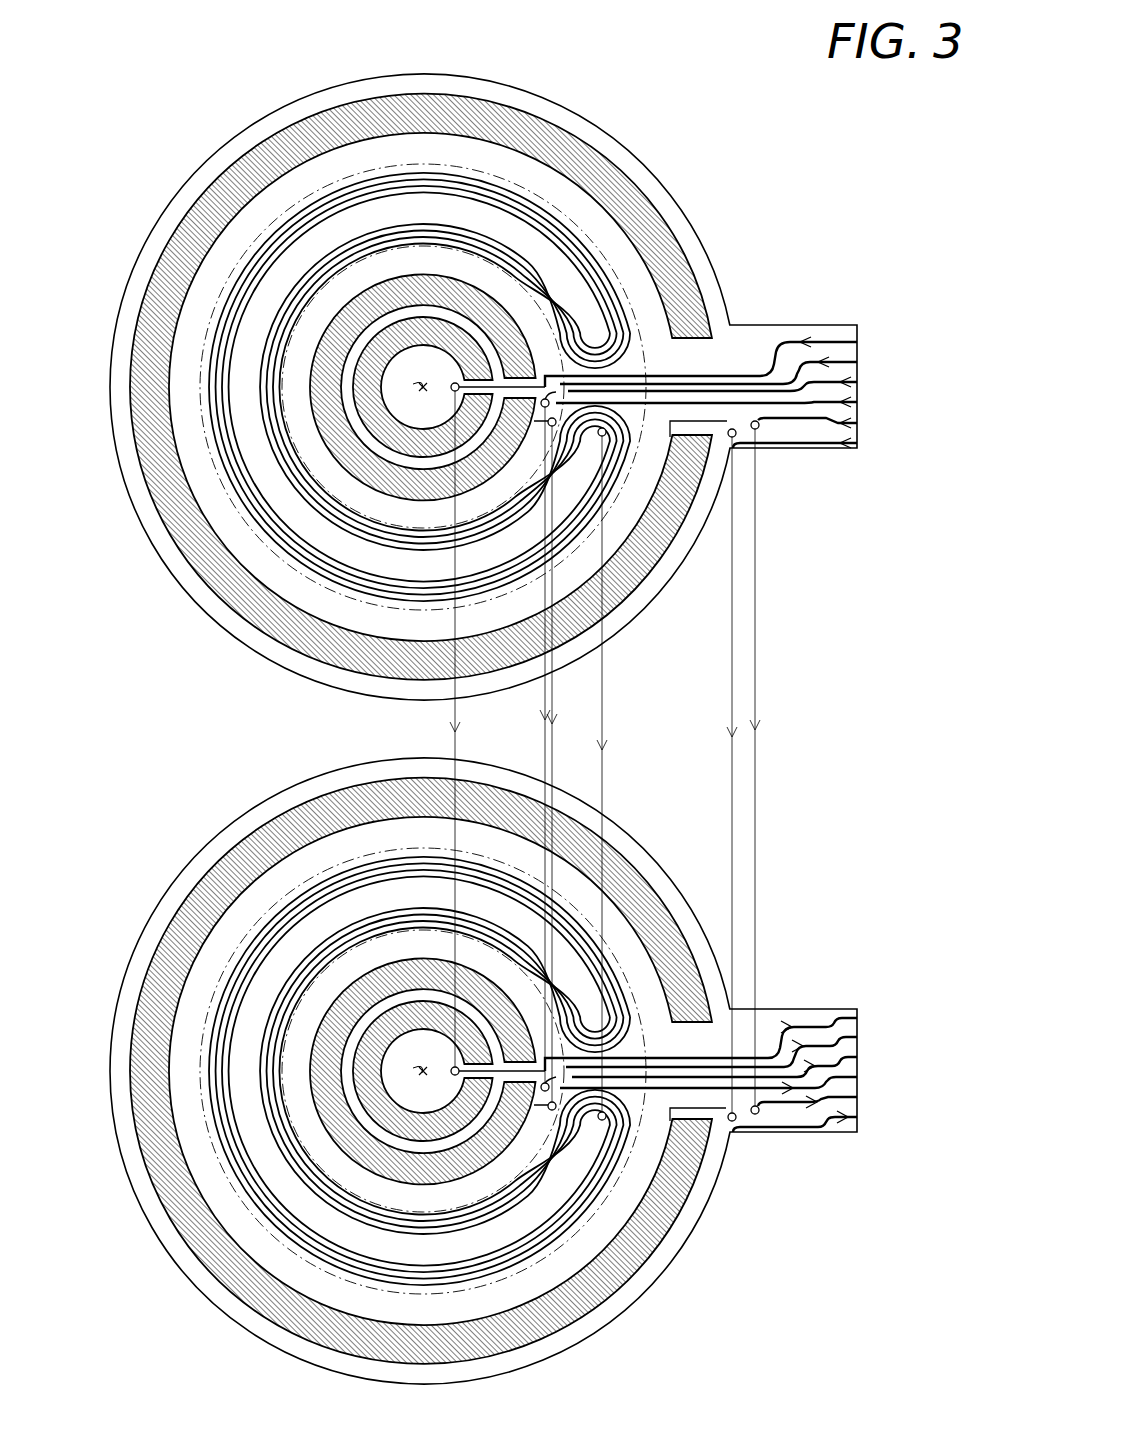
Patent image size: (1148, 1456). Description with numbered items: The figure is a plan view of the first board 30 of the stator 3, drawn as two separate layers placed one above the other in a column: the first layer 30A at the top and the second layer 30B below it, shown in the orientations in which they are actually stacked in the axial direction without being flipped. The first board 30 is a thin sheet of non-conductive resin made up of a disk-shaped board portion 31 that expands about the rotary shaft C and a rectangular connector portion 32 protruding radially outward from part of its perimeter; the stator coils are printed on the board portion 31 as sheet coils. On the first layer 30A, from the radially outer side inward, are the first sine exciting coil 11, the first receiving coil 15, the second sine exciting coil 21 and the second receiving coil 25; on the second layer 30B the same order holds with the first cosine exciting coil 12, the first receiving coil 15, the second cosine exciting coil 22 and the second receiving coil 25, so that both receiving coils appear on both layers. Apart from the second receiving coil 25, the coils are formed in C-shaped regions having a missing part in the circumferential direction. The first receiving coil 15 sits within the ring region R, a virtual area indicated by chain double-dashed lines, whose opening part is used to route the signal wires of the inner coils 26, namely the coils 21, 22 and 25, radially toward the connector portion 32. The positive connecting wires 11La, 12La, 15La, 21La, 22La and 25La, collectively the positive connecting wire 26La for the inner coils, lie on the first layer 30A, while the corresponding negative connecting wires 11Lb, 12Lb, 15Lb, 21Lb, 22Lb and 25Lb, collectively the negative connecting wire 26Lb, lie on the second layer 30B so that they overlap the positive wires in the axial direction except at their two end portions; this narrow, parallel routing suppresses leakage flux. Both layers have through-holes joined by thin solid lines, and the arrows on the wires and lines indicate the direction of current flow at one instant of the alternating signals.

The stator 3 is at (501, 706).
The first board 30 is at (102, 108).
The first layer 30A is at (150, 217).
The second layer 30B is at (150, 922).
The board portion 31 is at (690, 209).
The connector portion 32 is at (866, 383).
The first sine exciting coil 11 is at (156, 532).
The first cosine exciting coil 12 is at (156, 1217).
The first receiving coil 15 is at (212, 455).
The second sine exciting coil 21 is at (306, 394).
The second cosine exciting coil 22 is at (306, 1078).
The second receiving coil 25 is at (343, 382).
The inner coils 26 is at (43, 297).
The ring region R is at (598, 213).
The rotary shaft C is at (411, 721).
The positive connecting wire of signal wire 26L 26La is at (940, 334).
The positive connecting wire of signal wire 25L 25La is at (740, 376).
The positive connecting wire of signal wire 22L 22La is at (757, 384).
The positive connecting wire of signal wire 21L 21La is at (768, 391).
The positive connecting wire of signal wire 11L 11La is at (790, 426).
The positive connecting wire of signal wire 12L 12La is at (765, 408).
The positive connecting wire of signal wire 15L 15La is at (748, 452).
The negative connecting wire of signal wire 26L 26Lb is at (940, 994).
The negative connecting wire of signal wire 25L 25Lb is at (796, 1027).
The negative connecting wire of signal wire 22L 22Lb is at (808, 1046).
The negative connecting wire of signal wire 21L 21Lb is at (836, 1066).
The negative connecting wire of signal wire 11L 11Lb is at (807, 1105).
The negative connecting wire of signal wire 12L 12Lb is at (770, 1095).
The negative connecting wire of signal wire 15L 15Lb is at (757, 1092).